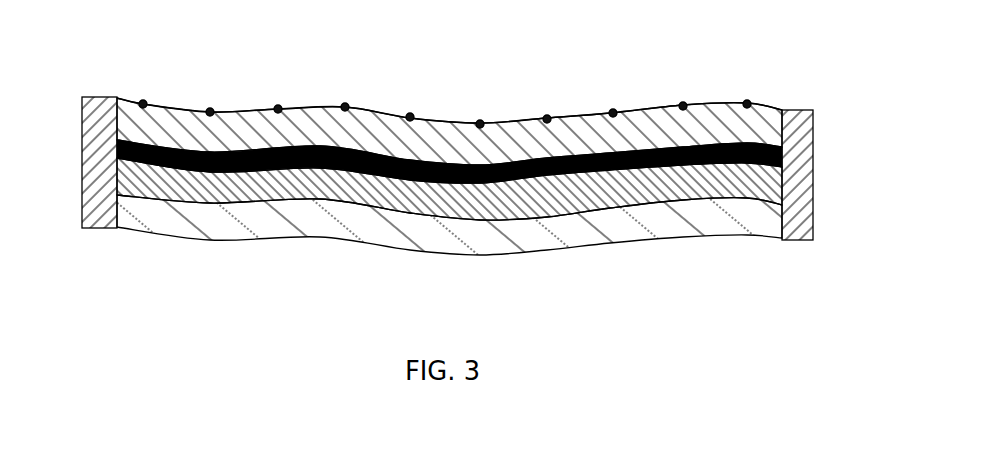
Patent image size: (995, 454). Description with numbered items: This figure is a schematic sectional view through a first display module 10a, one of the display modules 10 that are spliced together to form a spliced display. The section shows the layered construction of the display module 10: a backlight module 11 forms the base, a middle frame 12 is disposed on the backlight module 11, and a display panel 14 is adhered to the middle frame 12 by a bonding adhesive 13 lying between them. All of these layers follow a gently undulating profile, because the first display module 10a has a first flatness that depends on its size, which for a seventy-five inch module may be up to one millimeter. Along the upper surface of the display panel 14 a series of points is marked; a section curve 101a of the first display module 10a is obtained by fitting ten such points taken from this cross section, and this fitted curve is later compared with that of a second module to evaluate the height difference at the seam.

The display module 10 is at (178, 43).
The first display module 10a is at (447, 185).
The section curve 101a is at (443, 118).
The backlight module 11 is at (509, 248).
The middle frame 12 is at (212, 200).
The bonding adhesive 13 is at (318, 168).
The display panel 14 is at (438, 137).